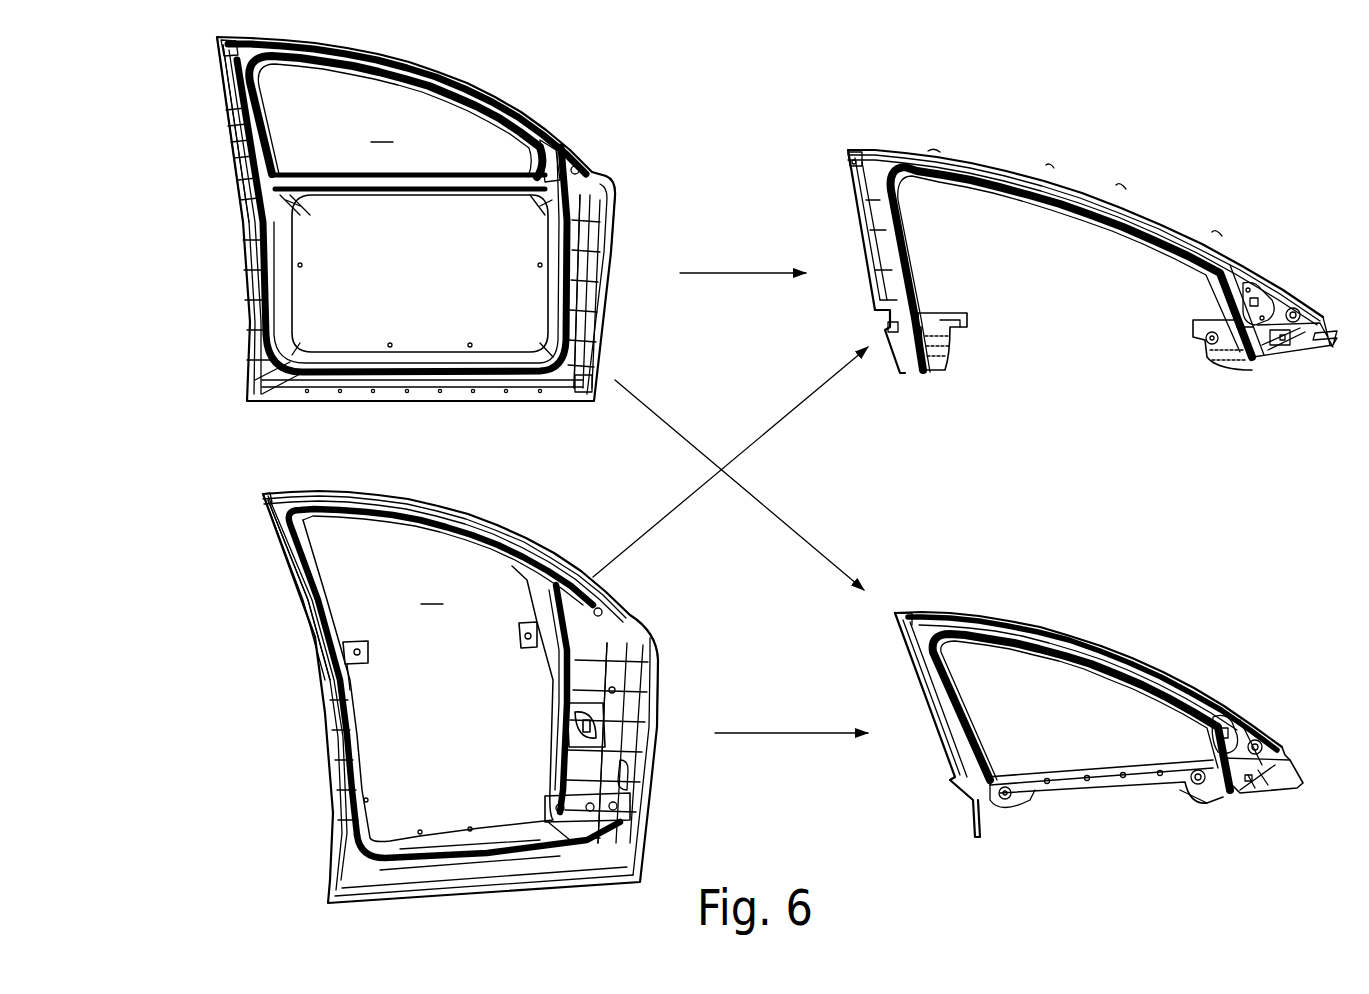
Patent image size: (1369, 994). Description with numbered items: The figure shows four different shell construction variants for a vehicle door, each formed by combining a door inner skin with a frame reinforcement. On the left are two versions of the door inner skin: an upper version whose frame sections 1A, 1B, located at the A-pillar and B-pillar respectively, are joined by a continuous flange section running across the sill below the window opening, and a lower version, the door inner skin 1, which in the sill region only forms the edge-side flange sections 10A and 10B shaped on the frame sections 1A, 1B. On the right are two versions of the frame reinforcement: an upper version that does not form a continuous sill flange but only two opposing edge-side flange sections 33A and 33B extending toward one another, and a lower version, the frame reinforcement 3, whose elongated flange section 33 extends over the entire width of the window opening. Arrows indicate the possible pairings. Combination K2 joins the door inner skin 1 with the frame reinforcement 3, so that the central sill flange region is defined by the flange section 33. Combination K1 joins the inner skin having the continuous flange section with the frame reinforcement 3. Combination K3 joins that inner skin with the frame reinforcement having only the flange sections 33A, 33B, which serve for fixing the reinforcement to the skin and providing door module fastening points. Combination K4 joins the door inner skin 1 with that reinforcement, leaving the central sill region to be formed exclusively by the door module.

The door inner skin 1 is at (270, 551).
The frame section 1A is at (591, 172).
The frame section 1B is at (232, 103).
The edge-side flange section 10A is at (535, 648).
The edge-side flange section 10B is at (349, 676).
The frame reinforcement 3 is at (1190, 670).
The flange section 33 is at (1118, 795).
The edge-side flange section 33A is at (1223, 352).
The edge-side flange section 33B is at (948, 355).
The combination K1 is at (739, 485).
The combination K2 is at (791, 716).
The combination K3 is at (743, 256).
The combination K4 is at (730, 462).